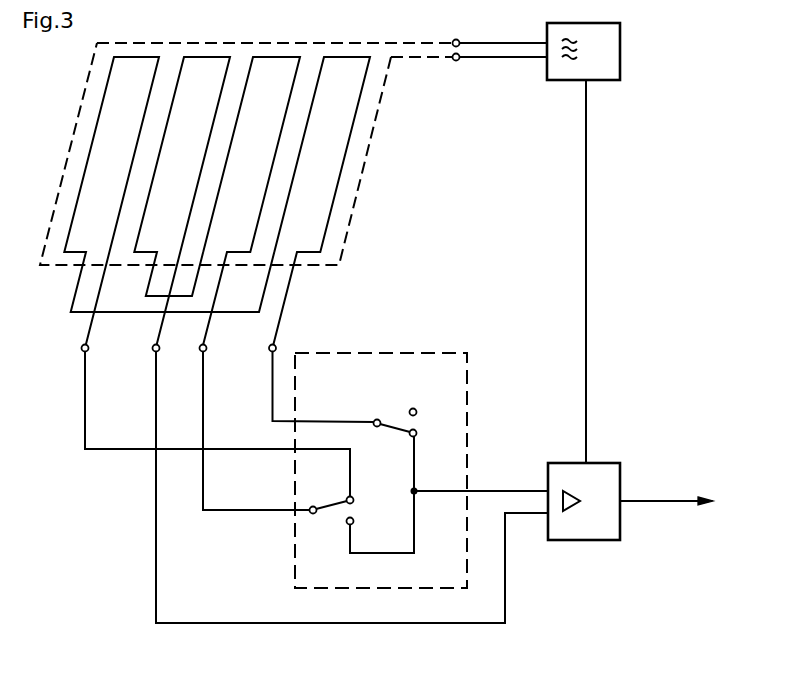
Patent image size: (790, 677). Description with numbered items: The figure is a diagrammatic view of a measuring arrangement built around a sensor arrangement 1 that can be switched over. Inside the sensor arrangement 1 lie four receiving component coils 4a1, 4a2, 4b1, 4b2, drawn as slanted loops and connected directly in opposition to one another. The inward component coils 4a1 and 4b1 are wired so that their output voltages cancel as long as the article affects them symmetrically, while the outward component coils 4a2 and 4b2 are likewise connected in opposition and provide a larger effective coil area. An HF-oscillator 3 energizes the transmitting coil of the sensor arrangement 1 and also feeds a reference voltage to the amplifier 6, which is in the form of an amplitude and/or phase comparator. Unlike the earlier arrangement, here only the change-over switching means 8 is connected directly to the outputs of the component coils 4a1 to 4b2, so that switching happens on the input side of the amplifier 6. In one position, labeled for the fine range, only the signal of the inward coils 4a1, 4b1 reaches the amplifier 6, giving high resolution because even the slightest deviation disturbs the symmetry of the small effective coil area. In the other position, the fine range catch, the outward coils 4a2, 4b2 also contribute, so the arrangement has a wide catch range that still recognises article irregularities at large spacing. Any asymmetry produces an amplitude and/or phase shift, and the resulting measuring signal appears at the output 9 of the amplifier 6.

The sensor arrangement 1 is at (285, 43).
The HF-oscillator 3 is at (583, 51).
The receiving component coil 4a1 is at (182, 202).
The receiving component coil 4a2 is at (169, 202).
The receiving component coil 4b1 is at (251, 202).
The receiving component coil 4b2 is at (322, 202).
The amplifier 6 is at (584, 501).
The change-over switching means 8 is at (421, 470).
The output 9 is at (676, 503).